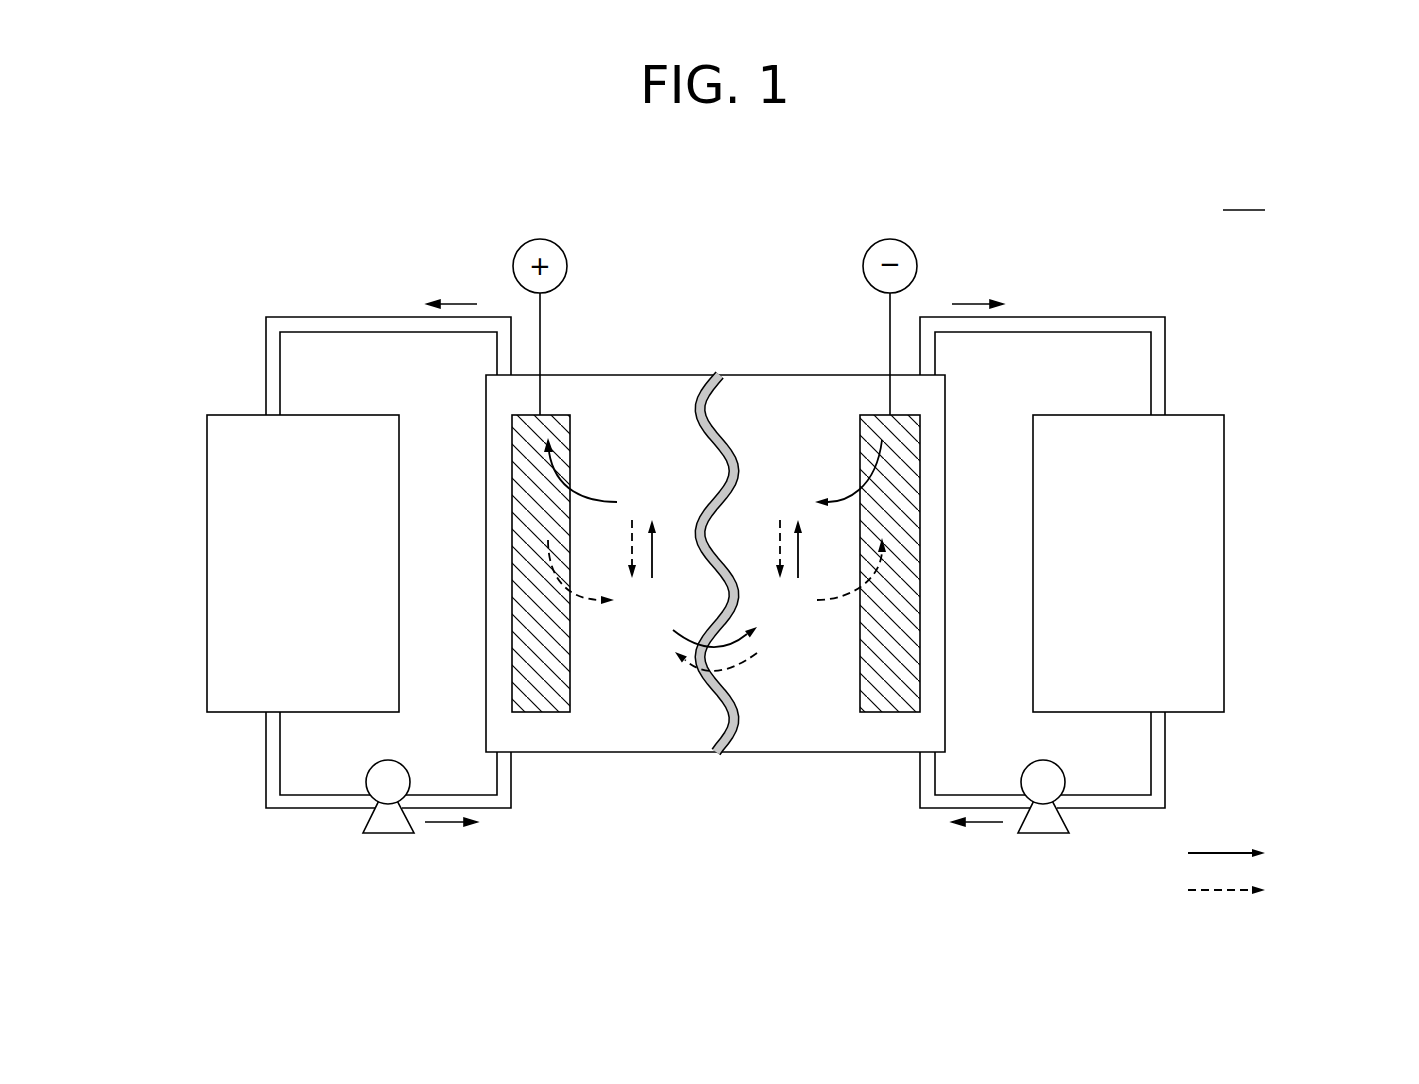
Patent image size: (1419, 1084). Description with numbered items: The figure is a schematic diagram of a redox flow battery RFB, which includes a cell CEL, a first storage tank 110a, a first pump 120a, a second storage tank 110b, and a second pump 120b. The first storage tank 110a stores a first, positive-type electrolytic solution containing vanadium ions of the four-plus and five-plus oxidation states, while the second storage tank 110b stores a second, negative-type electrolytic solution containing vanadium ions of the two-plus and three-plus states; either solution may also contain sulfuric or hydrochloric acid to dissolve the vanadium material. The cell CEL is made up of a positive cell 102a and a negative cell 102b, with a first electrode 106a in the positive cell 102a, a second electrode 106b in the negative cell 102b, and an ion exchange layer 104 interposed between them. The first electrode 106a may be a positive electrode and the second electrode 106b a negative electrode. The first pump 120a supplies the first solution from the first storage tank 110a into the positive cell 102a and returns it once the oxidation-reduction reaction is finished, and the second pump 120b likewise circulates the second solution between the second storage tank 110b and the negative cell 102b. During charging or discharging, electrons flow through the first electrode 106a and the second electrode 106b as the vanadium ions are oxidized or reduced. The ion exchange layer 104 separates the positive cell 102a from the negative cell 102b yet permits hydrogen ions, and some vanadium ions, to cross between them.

The first storage tank 110a is at (220, 562).
The second storage tank 110b is at (1212, 563).
The first pump 120a is at (388, 823).
The second pump 120b is at (1043, 823).
The first electrode 106a is at (540, 695).
The second electrode 106b is at (892, 695).
The positive cell 102a is at (627, 737).
The negative cell 102b is at (803, 737).
The ion exchange layer 104 is at (730, 723).
The cell CEL is at (652, 374).
The redox flow battery RFB is at (1244, 196).